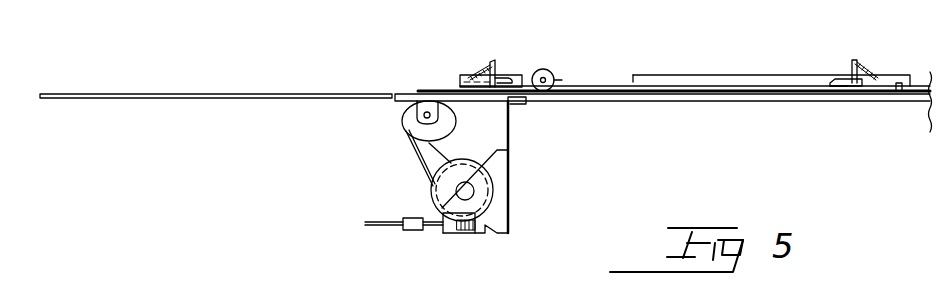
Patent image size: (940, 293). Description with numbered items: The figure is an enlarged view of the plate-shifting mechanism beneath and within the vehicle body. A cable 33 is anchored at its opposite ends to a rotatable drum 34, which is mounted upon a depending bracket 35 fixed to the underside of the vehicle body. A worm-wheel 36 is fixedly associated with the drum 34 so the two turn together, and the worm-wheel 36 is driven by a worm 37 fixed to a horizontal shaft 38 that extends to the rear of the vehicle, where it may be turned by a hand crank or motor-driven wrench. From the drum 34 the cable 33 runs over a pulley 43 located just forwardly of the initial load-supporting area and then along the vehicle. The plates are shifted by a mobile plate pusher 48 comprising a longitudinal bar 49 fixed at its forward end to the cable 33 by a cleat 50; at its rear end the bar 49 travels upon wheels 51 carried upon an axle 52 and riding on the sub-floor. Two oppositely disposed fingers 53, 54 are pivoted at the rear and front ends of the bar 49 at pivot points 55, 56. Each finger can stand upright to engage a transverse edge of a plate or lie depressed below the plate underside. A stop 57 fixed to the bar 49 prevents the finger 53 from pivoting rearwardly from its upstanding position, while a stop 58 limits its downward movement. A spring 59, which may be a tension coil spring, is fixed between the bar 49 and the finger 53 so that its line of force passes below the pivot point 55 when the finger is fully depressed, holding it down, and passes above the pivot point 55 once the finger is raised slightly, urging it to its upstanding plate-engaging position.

The cable 33 is at (418, 162).
The rotatable drum 34 is at (465, 168).
The depending bracket 35 is at (513, 187).
The worm-wheel 36 is at (493, 207).
The worm 37 is at (467, 232).
The horizontal shaft 38 is at (387, 226).
The pulley 43 is at (402, 118).
The mobile plate pusher 48 is at (728, 68).
The longitudinal bar 49 is at (635, 80).
The cleat 50 is at (898, 92).
The wheels 51 is at (543, 69).
The axle 52 is at (556, 81).
The finger 53 is at (497, 72).
The finger 54 is at (854, 60).
The pivot point 55 is at (504, 78).
The pivot point 56 is at (848, 78).
The stop 57 is at (490, 75).
The stop 58 is at (515, 95).
The spring 59 is at (468, 78).